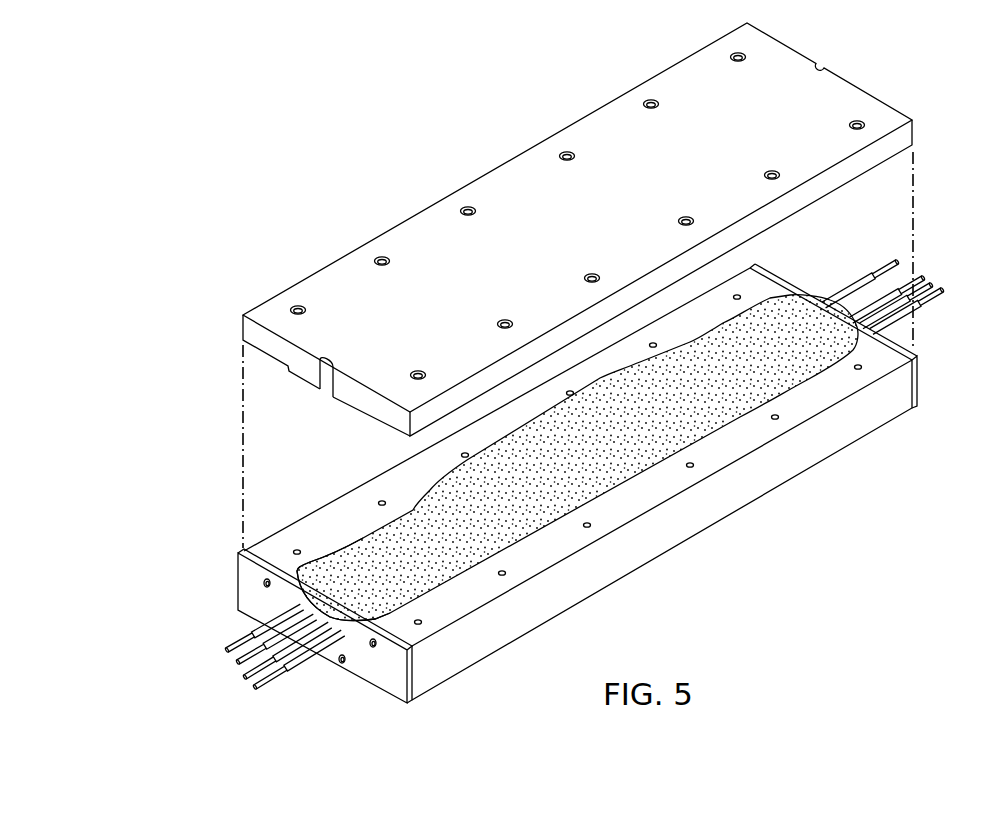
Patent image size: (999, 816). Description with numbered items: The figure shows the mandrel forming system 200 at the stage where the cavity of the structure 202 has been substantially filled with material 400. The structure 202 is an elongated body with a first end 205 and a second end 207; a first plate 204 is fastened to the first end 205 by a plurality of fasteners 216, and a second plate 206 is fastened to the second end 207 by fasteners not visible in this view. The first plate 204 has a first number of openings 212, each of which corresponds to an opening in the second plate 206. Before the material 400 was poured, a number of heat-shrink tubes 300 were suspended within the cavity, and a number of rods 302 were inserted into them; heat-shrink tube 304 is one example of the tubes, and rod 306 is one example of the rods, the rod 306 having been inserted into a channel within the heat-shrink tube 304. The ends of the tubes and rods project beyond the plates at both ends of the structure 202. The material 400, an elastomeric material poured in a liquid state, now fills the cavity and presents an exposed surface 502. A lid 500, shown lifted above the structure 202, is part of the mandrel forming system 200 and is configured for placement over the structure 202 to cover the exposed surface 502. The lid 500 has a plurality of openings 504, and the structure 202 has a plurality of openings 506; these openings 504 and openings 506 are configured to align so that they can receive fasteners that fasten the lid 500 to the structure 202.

The mandrel forming system 200 is at (577, 229).
The structure 202 is at (580, 485).
The first plate 204 is at (295, 643).
The first end 205 is at (428, 662).
The second plate 206 is at (793, 276).
The second end 207 is at (902, 401).
The first number of openings 212 is at (347, 647).
The plurality of fasteners 216 is at (258, 587).
The number of heat-shrink tubes 300 is at (938, 273).
The number of rods 302 is at (268, 690).
The heat-shrink tube 304 is at (298, 670).
The rod 306 is at (225, 650).
The material 400 is at (577, 458).
The lid 500 is at (590, 110).
The exposed surface 502 is at (348, 554).
The plurality of openings 504 is at (418, 369).
The plurality of openings 506 is at (422, 620).